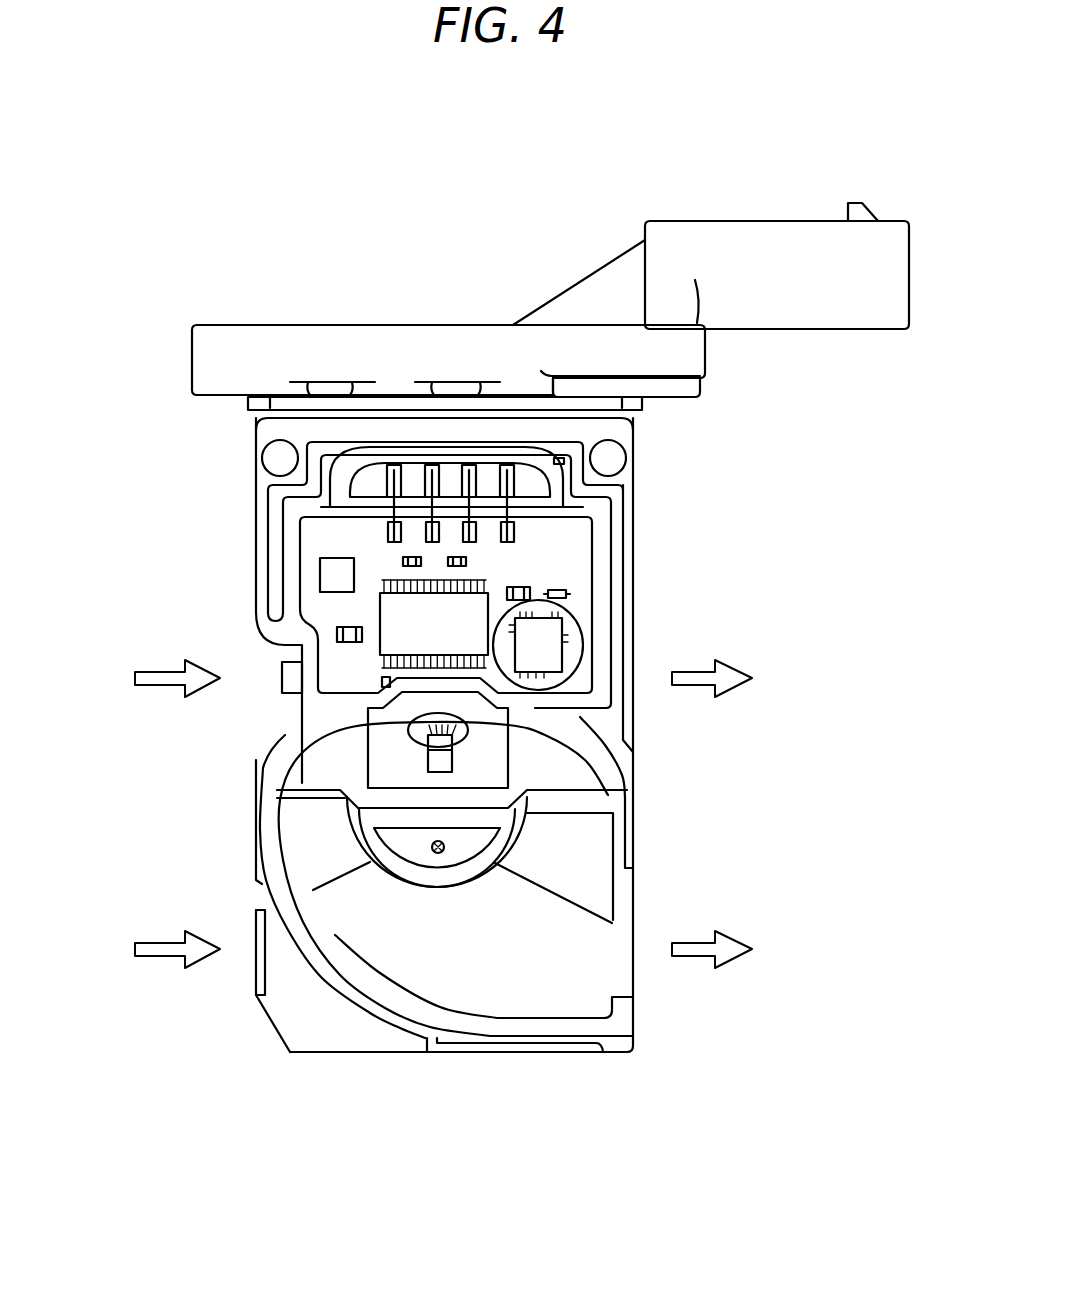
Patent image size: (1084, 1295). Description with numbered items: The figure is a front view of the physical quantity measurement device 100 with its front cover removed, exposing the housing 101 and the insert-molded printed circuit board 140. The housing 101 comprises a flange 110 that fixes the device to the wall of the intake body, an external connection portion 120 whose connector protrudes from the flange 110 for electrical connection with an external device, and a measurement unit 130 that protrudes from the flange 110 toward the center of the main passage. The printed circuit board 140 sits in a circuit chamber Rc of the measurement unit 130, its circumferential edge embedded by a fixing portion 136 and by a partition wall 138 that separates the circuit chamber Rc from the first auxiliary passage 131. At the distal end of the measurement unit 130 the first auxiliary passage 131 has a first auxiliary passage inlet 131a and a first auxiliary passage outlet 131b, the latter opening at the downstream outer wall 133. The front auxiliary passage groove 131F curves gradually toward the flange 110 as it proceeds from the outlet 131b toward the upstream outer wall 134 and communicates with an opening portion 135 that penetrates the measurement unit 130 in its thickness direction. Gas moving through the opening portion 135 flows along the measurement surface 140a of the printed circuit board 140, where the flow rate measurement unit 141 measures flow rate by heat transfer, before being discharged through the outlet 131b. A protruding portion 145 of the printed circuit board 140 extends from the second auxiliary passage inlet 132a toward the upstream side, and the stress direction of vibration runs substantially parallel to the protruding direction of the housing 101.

The physical quantity measurement device 100 is at (262, 170).
The housing 101 is at (827, 388).
The flange 110 is at (716, 361).
The external connection portion 120 is at (792, 342).
The measurement unit 130 is at (651, 496).
The first auxiliary passage 131 is at (571, 1033).
The first auxiliary passage inlet 131a is at (254, 985).
The first auxiliary passage outlet 131b is at (636, 993).
The front auxiliary passage groove 131F is at (507, 985).
The second auxiliary passage inlet 132a is at (282, 690).
The downstream outer wall 133 is at (636, 572).
The upstream outer wall 134 is at (254, 503).
The opening portion 135 is at (310, 776).
The fixing portion 136 is at (586, 633).
The partition wall 138 is at (456, 700).
The printed circuit board 140 is at (558, 537).
The measurement surface 140a is at (485, 747).
The flow rate measurement unit 141 is at (445, 758).
The protruding portion 145 is at (274, 677).
The circuit chamber Rc is at (317, 534).